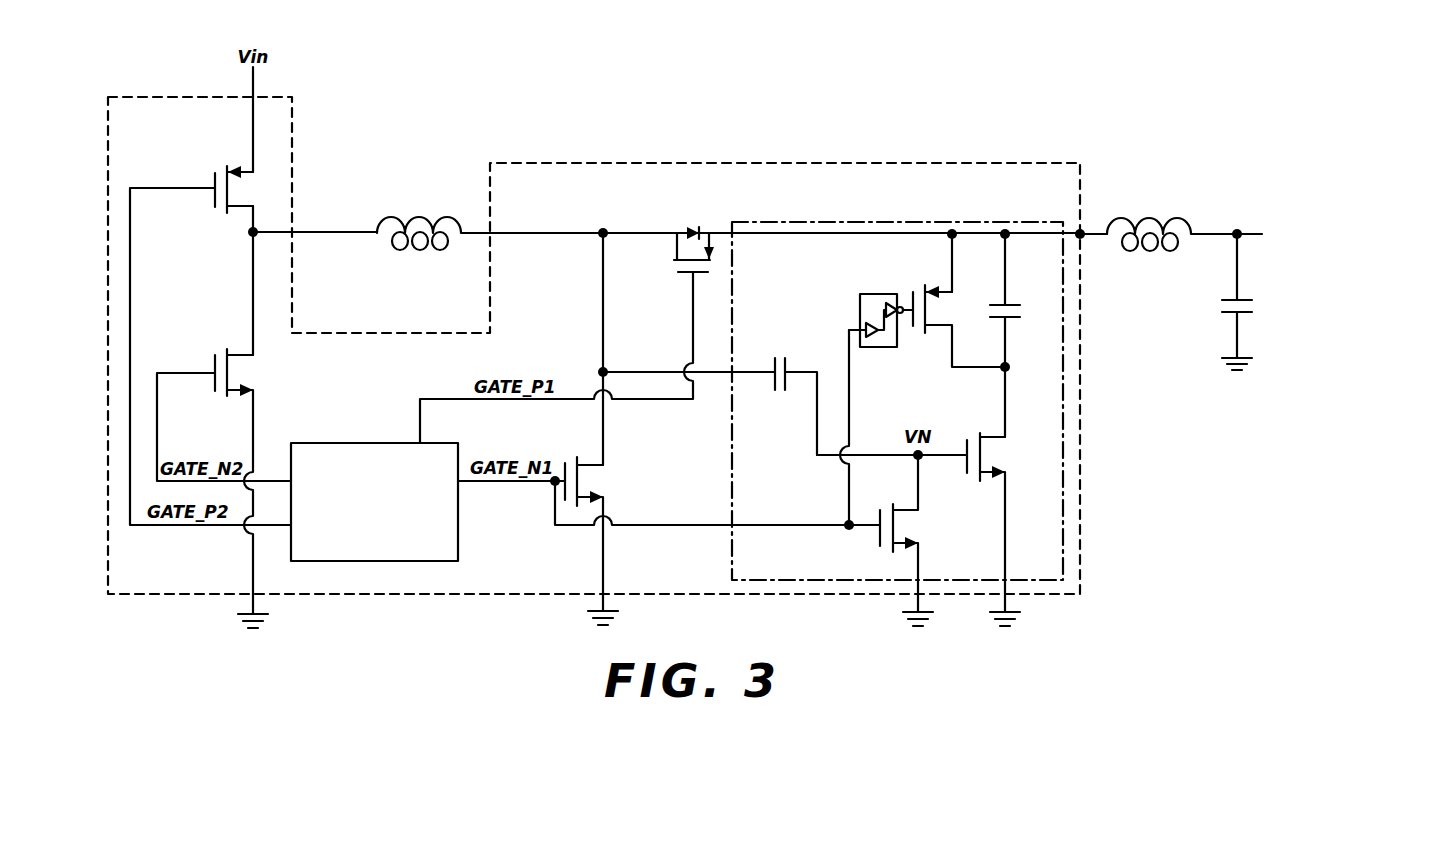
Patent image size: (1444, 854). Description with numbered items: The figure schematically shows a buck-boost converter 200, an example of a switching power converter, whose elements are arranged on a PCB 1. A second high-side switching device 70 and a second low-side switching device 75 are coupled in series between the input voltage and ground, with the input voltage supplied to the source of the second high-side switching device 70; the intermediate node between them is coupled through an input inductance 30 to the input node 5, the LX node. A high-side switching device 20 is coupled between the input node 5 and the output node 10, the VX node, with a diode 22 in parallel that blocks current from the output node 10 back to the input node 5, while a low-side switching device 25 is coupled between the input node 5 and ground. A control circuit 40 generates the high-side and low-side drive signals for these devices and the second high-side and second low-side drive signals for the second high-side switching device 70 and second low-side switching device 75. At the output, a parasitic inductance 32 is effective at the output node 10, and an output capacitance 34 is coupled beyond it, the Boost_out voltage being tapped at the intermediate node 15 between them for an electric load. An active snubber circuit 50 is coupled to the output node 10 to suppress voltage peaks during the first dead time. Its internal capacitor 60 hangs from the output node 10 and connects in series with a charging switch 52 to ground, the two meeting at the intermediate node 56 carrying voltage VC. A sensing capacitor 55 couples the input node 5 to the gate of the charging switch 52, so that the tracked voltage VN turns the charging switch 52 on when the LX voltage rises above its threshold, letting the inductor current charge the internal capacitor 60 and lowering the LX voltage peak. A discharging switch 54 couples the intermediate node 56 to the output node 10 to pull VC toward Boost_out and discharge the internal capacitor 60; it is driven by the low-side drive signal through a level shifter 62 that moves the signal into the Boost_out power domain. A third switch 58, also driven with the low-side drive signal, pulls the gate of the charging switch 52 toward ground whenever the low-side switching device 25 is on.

The PCB 1 is at (162, 594).
The buck-boost converter 200 is at (402, 100).
The second high-side switching device 70 is at (219, 164).
The second low-side switching device 75 is at (245, 373).
The input inductance 30 is at (417, 217).
The input node 5 is at (599, 240).
The diode 22 is at (694, 224).
The high-side switching device 20 is at (673, 265).
The low-side switching device 25 is at (593, 482).
The control circuit 40 is at (400, 561).
The sensing capacitor 55 is at (768, 382).
The active snubber circuit 50 is at (1065, 525).
The level shifter 62 is at (858, 298).
The discharging switch 54 is at (914, 289).
The internal capacitor 60 is at (990, 307).
The intermediate node 56 is at (1000, 374).
The charging switch 52 is at (975, 485).
The third switch 58 is at (886, 552).
The output node 10 is at (1076, 228).
The parasitic inductance 32 is at (1146, 218).
The intermediate node 15 is at (1236, 227).
The output capacitance 34 is at (1222, 305).